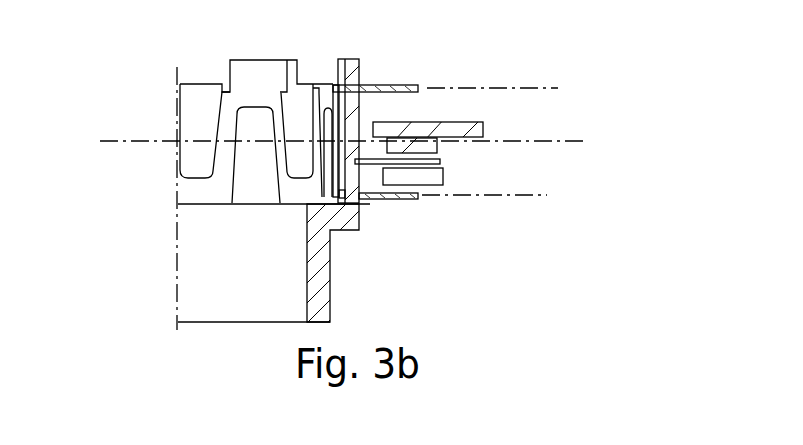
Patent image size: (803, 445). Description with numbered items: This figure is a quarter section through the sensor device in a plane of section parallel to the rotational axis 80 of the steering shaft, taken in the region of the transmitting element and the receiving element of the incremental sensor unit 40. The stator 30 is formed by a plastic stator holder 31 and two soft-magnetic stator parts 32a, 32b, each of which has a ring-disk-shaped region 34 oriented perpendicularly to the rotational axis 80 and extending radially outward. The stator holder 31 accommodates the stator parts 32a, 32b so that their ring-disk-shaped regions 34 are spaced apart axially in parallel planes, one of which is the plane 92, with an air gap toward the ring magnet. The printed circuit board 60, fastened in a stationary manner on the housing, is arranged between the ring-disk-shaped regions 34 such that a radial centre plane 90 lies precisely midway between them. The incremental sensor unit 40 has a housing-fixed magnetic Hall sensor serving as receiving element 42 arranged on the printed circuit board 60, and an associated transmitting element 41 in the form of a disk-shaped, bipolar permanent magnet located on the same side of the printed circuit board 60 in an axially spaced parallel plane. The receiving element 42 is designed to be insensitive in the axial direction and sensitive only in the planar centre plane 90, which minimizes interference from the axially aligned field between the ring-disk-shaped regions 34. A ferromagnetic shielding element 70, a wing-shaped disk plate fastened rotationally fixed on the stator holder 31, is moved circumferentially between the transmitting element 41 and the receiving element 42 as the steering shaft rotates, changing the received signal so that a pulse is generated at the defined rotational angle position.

The stator 30 is at (188, 224).
The stator holder 31 is at (320, 305).
The stator part 32a is at (337, 203).
The stator part 32b is at (333, 84).
The ring-disk-shaped region 34 is at (387, 85).
The incremental sensor unit 40 is at (438, 100).
The transmitting element 41 is at (437, 187).
The receiving element 42 is at (440, 143).
The printed circuit board 60 is at (472, 122).
The shielding element 70 is at (440, 161).
The rotational axis 80 is at (178, 296).
The centre plane 90 is at (527, 88).
The parallel plane 92 is at (547, 195).